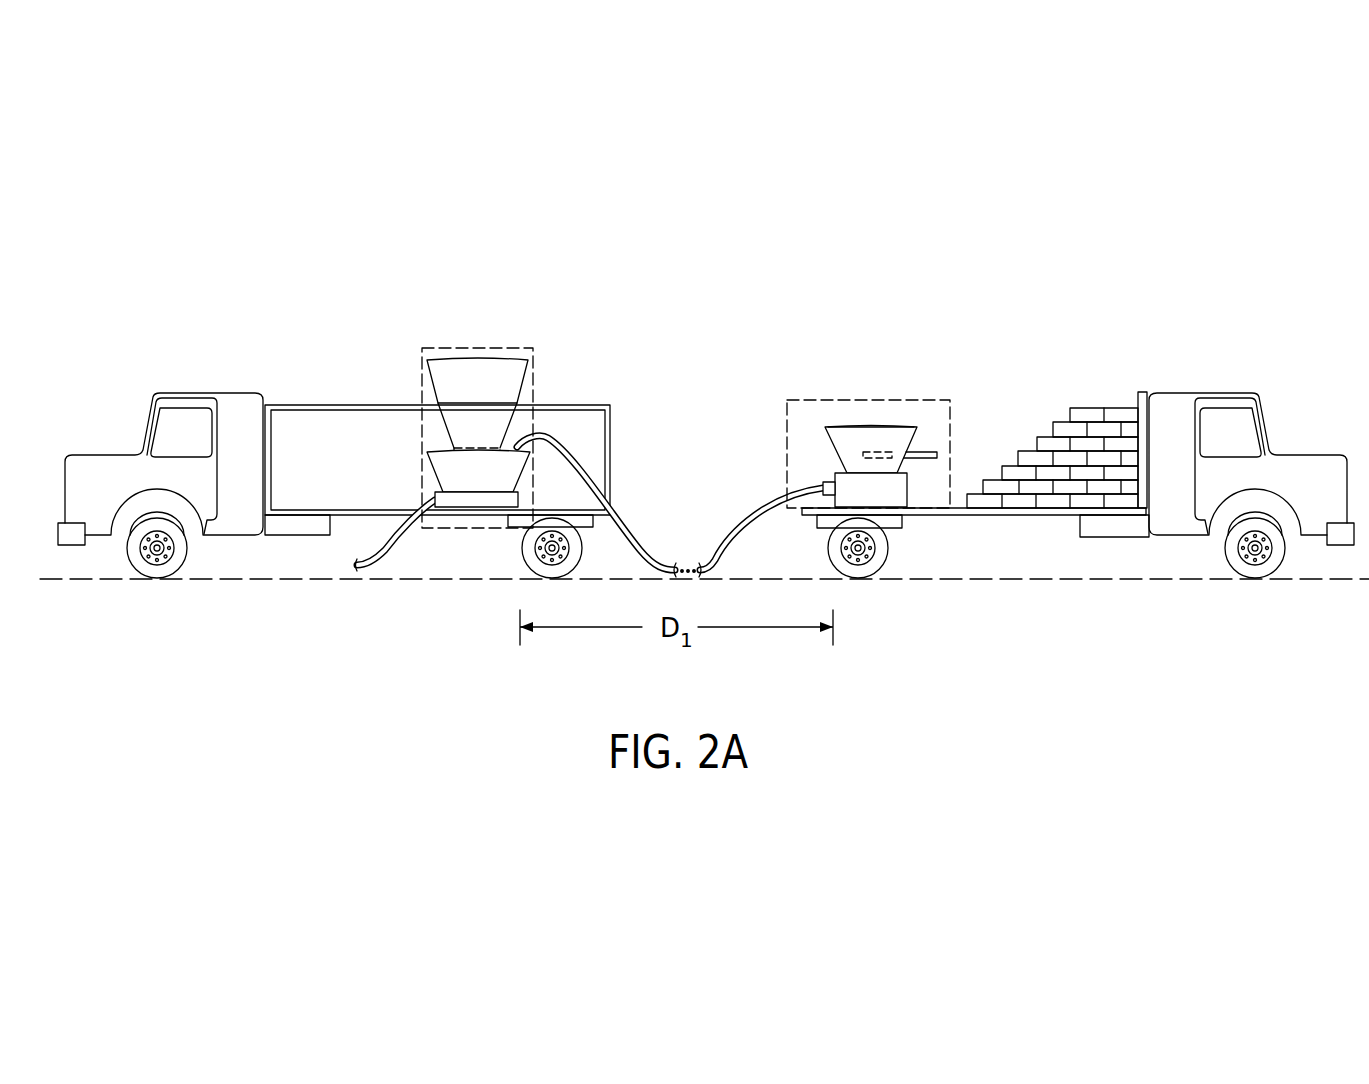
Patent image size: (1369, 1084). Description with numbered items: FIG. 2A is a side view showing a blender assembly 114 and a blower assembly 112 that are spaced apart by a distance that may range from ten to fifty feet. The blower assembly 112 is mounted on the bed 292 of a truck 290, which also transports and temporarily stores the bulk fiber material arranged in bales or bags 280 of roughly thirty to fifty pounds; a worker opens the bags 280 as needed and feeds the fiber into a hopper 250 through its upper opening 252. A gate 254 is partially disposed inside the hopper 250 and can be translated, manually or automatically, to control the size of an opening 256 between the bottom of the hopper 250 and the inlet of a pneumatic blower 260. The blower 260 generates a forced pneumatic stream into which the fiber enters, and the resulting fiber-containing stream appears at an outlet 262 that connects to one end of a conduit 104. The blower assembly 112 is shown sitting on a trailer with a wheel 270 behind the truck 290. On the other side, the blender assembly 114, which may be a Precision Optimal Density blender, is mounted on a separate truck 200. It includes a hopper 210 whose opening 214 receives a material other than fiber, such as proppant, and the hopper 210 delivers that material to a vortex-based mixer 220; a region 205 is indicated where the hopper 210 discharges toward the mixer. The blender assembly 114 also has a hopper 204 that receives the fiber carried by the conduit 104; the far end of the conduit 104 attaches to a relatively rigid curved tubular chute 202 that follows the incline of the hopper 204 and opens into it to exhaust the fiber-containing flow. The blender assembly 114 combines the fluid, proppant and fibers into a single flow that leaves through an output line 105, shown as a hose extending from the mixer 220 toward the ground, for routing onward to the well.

The conduit 104 is at (757, 528).
The output line 105 is at (382, 560).
The blower assembly 112 is at (799, 392).
The blender assembly 114 is at (560, 338).
The truck 200 is at (210, 392).
The tubular chute 202 is at (542, 435).
The hopper 204 is at (433, 475).
The chute outlet 205 is at (477, 457).
The hopper 210 is at (523, 383).
The opening 214 is at (470, 359).
The vortex-based mixer 220 is at (480, 487).
The hopper 250 is at (890, 425).
The upper opening 252 is at (850, 425).
The gate 254 is at (940, 456).
The opening 256 is at (855, 457).
The pneumatic blower 260 is at (908, 490).
The outlet 262 is at (832, 485).
The trailer wheel 270 is at (822, 508).
The bales or bags 280 is at (1092, 413).
The truck 290 is at (1177, 392).
The bed 292 is at (1048, 516).